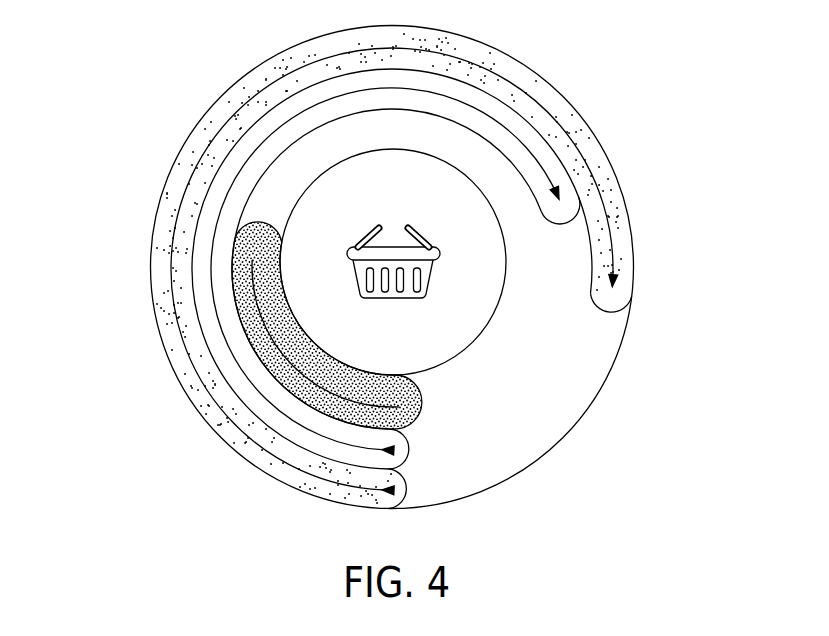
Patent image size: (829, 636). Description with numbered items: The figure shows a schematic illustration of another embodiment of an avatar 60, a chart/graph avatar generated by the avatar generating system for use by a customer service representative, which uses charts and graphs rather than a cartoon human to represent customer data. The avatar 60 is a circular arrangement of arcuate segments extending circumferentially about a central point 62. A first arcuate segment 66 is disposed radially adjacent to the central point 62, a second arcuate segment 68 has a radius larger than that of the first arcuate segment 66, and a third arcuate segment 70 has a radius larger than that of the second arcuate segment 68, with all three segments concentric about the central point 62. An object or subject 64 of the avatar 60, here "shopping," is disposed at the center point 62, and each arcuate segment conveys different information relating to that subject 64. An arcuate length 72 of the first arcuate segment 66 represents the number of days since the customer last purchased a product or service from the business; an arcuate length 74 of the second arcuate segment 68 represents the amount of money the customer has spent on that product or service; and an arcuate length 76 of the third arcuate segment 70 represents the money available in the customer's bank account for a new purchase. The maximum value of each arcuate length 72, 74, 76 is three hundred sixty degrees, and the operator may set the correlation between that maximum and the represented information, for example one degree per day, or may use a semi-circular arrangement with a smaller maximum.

The avatar 60 is at (597, 51).
The central point 62 is at (395, 268).
The object or subject 64 is at (482, 283).
The first arcuate segment 66 is at (417, 411).
The second arcuate segment 68 is at (331, 450).
The third arcuate segment 70 is at (263, 465).
The arcuate length 72 is at (293, 368).
The arcuate length 74 is at (216, 306).
The arcuate length 76 is at (170, 246).